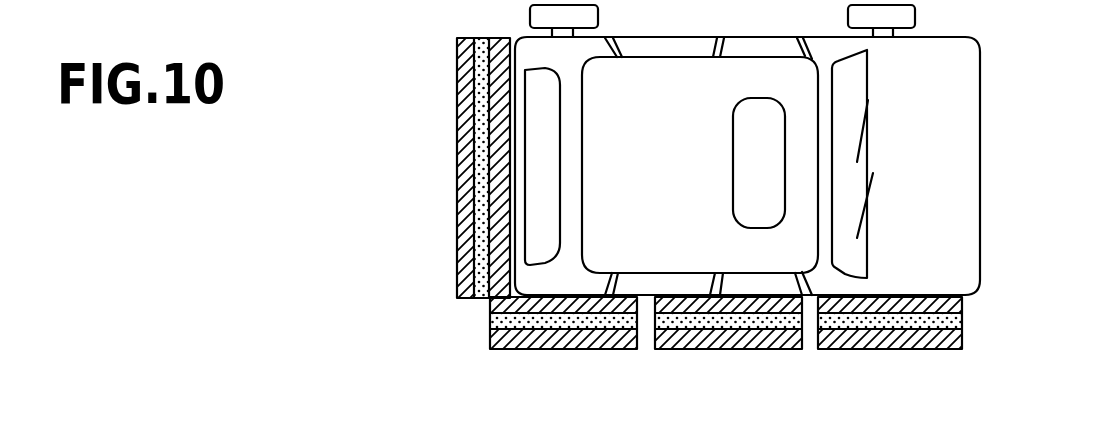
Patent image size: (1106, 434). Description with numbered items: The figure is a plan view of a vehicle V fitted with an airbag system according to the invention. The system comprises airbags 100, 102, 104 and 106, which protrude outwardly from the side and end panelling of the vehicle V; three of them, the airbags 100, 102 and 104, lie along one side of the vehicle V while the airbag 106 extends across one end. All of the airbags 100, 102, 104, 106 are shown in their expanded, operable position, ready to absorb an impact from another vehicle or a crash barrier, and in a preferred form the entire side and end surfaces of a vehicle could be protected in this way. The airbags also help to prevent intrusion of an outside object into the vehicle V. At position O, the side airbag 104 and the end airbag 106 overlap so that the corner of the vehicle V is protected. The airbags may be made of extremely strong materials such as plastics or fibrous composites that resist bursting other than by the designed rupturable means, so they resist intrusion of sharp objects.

The vehicle V is at (935, 130).
The airbag 106 is at (440, 147).
The position O is at (465, 322).
The airbag 104 is at (613, 350).
The airbag 102 is at (750, 362).
The airbag 100 is at (942, 362).